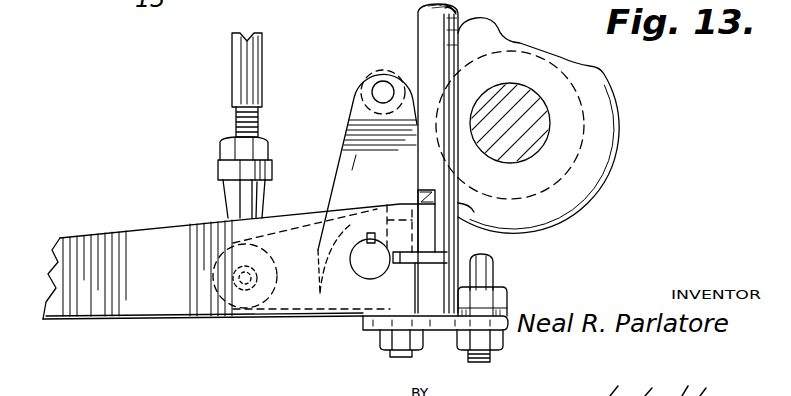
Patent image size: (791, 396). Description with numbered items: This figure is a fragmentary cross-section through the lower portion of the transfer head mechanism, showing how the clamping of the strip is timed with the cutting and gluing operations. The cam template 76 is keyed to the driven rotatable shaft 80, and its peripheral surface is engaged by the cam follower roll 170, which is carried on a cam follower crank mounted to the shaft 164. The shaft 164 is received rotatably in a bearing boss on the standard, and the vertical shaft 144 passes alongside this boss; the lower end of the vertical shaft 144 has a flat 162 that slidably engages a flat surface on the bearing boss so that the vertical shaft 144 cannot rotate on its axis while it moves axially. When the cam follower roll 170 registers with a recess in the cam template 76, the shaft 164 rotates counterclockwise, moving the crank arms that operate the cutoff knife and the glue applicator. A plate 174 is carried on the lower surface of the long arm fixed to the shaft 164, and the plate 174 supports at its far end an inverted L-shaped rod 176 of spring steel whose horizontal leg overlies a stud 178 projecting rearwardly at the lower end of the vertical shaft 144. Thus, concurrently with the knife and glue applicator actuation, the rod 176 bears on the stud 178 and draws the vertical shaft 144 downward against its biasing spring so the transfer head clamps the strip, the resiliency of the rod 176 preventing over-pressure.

The cam template 76 is at (606, 112).
The rotatable shaft 80 is at (515, 152).
The vertical shaft 144 is at (418, 35).
The flat 162 is at (458, 203).
The shaft 164 is at (362, 264).
The cam follower roll 170 is at (352, 98).
The plate 174 is at (364, 331).
The inverted L-shaped rod 176 is at (477, 247).
The stud 178 is at (500, 286).